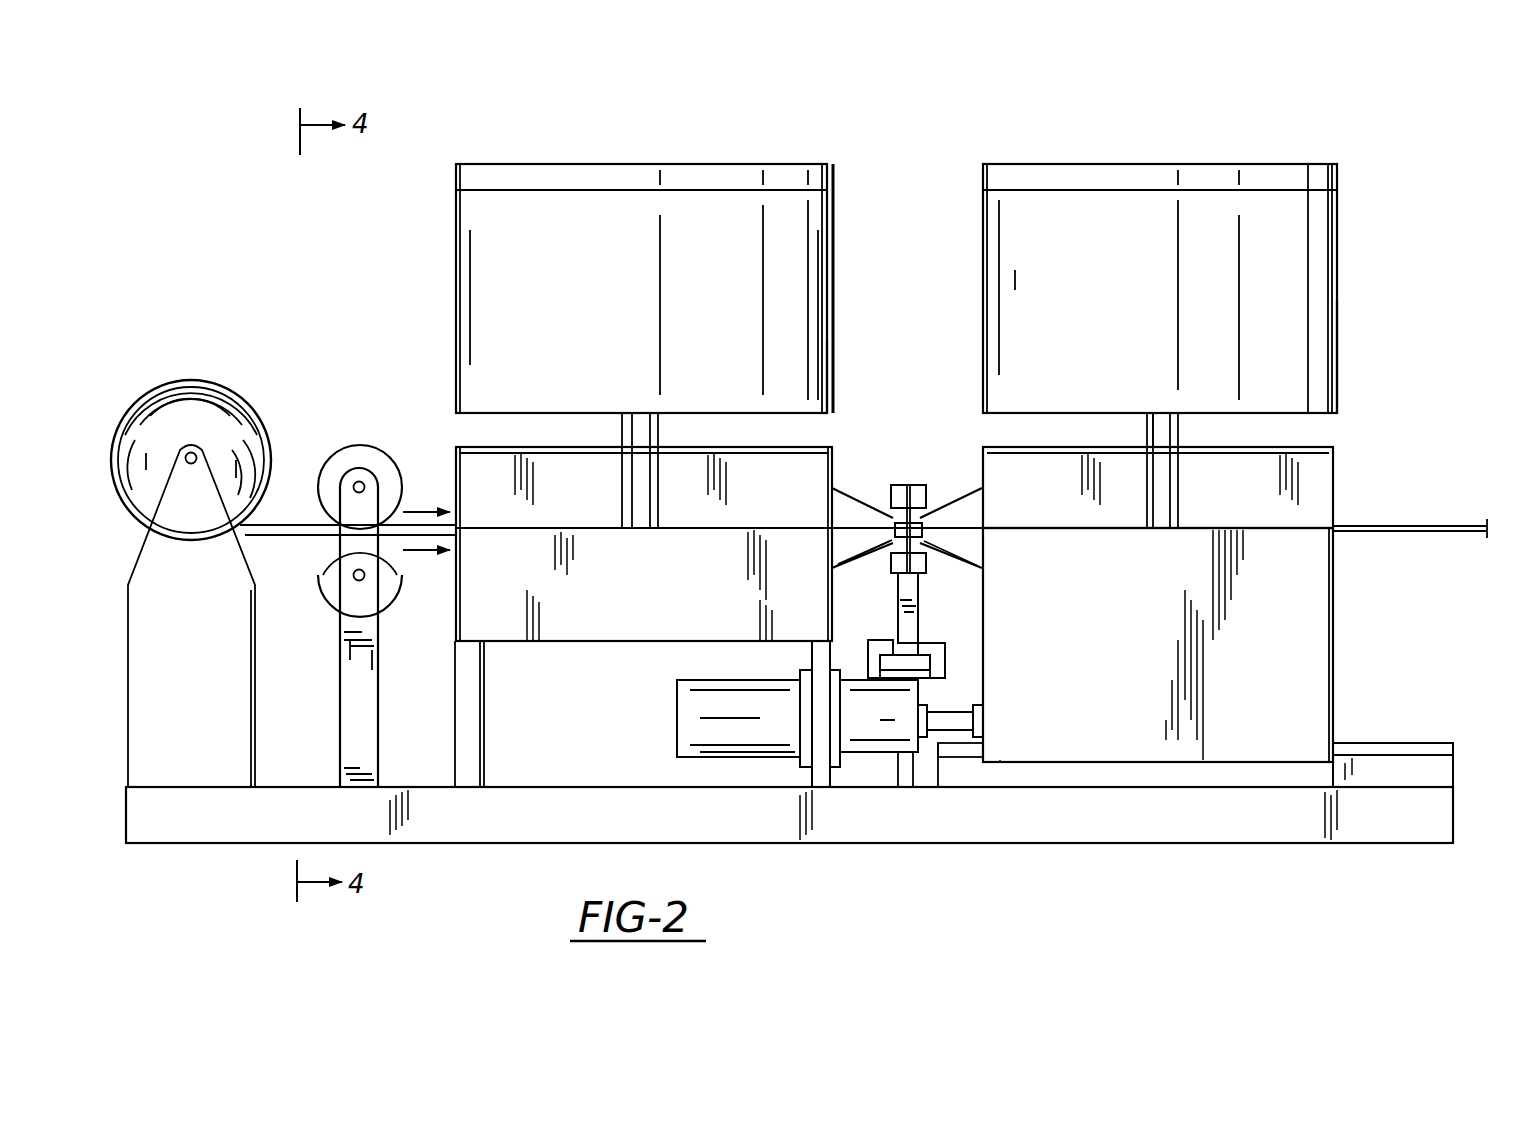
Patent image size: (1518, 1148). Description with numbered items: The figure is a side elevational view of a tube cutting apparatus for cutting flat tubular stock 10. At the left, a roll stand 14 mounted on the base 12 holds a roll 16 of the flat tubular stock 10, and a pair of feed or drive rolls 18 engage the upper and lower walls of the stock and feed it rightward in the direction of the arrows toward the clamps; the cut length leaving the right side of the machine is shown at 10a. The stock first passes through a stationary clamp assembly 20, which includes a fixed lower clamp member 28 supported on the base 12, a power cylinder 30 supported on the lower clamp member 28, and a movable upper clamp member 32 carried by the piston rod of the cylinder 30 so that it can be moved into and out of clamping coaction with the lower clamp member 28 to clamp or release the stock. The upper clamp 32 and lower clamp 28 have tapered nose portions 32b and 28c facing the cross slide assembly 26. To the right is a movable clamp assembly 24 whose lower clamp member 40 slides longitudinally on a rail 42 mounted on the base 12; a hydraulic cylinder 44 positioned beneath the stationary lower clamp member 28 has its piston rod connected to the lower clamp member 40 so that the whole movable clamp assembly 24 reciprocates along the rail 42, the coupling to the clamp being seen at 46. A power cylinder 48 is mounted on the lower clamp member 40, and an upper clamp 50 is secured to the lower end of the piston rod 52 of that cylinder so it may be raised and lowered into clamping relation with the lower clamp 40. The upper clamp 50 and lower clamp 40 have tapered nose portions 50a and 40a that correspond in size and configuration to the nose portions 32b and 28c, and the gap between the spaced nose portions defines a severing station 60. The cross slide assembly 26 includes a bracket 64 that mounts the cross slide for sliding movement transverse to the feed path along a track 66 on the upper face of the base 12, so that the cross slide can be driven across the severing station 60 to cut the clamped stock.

The flat tubular stock 10 is at (186, 382).
The cut length of stock material 10a is at (1405, 526).
The base 12 is at (527, 780).
The roll stand 14 is at (260, 628).
The roll 16 is at (258, 385).
The feed or drive rolls 18 is at (368, 438).
The stationary clamp assembly 20 is at (840, 202).
The movable clamp assembly 24 is at (1343, 214).
The cross slide assembly 26 is at (900, 478).
The fixed lower clamp member 28 is at (448, 600).
The tapered nose portion 28c is at (863, 560).
The power cylinder 30 is at (838, 347).
The movable upper clamp member 32 is at (777, 506).
The tapered nose portion 32b is at (848, 493).
The lower clamp member 40 is at (1340, 570).
The tapered nose portion 40a is at (960, 568).
The rail 42 is at (1397, 740).
The hydraulic cylinder 44 is at (677, 718).
The drive coupling 46 is at (960, 688).
The power cylinder 48 is at (1345, 325).
The upper clamp 50 is at (1257, 506).
The tapered nose portion 50a is at (968, 493).
The piston rod 52 is at (1178, 432).
The severing station 60 is at (936, 480).
The bracket 64 is at (920, 630).
The track 66 is at (937, 670).